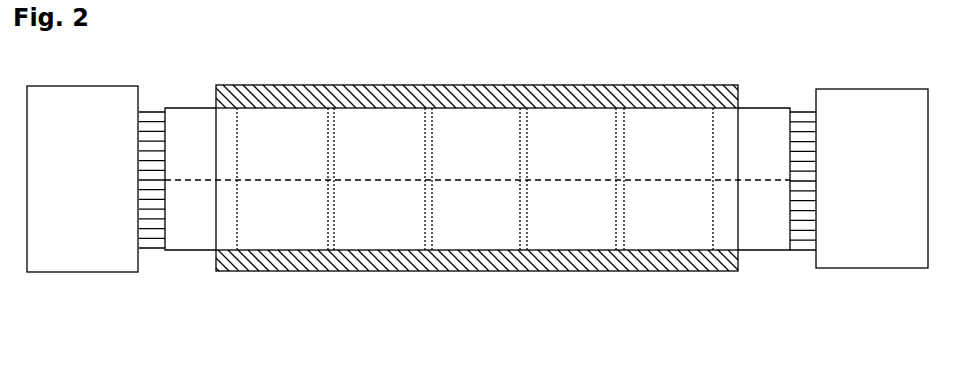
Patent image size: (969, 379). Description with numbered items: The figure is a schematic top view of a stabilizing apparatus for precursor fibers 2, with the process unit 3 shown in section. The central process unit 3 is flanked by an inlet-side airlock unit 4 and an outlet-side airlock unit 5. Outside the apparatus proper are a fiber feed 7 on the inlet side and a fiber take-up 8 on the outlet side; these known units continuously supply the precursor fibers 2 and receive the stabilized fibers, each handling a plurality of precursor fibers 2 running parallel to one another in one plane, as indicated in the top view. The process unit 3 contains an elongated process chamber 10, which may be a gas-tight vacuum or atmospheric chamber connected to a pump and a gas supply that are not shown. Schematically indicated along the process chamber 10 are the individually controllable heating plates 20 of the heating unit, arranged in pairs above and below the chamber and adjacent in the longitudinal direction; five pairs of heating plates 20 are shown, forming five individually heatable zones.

The precursor fibers 2 is at (800, 140).
The process unit 3 is at (689, 276).
The inlet-side airlock unit 4 is at (184, 254).
The outlet-side airlock unit 5 is at (757, 254).
The fiber feed 7 is at (86, 278).
The fiber take-up 8 is at (882, 272).
The process chamber 10 is at (229, 256).
The heating plates 20 is at (483, 238).